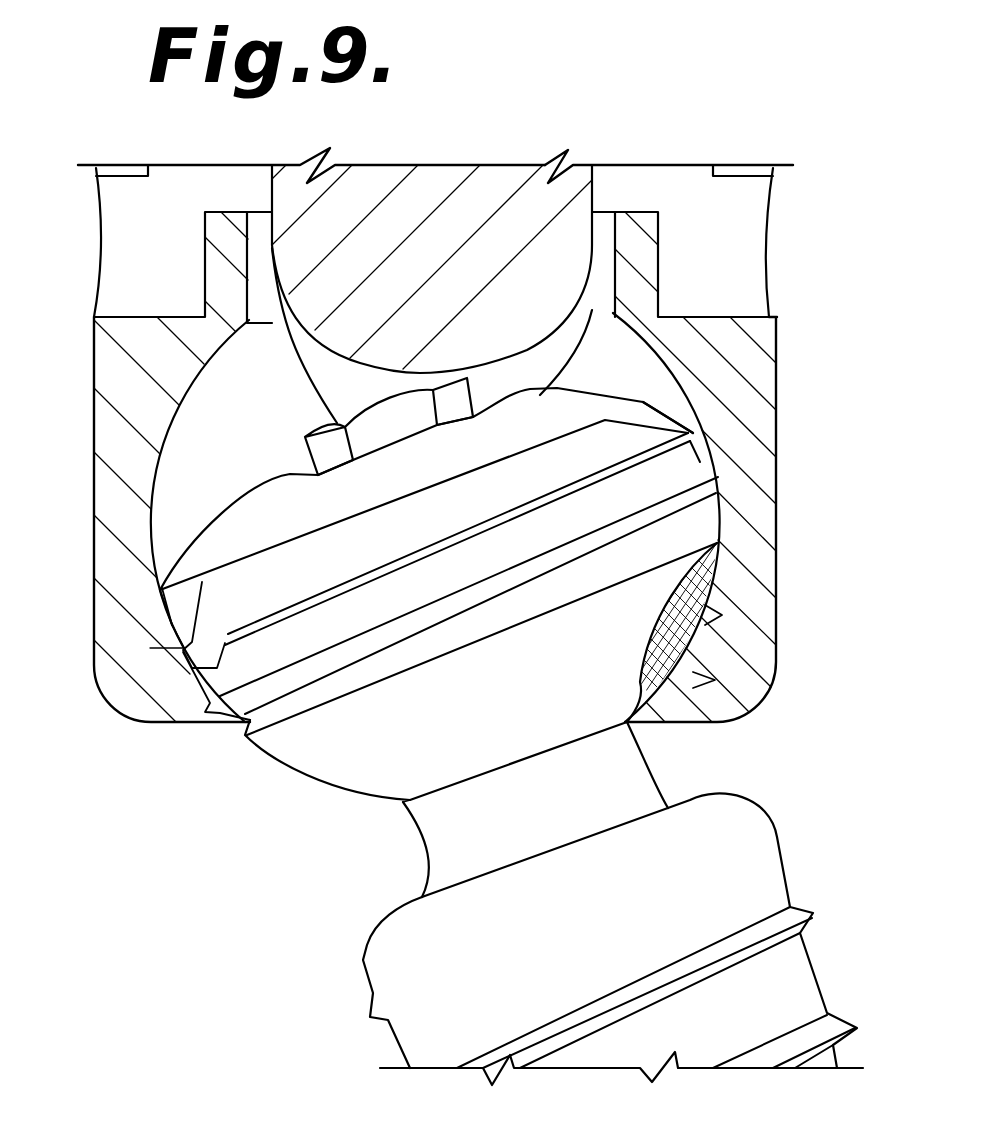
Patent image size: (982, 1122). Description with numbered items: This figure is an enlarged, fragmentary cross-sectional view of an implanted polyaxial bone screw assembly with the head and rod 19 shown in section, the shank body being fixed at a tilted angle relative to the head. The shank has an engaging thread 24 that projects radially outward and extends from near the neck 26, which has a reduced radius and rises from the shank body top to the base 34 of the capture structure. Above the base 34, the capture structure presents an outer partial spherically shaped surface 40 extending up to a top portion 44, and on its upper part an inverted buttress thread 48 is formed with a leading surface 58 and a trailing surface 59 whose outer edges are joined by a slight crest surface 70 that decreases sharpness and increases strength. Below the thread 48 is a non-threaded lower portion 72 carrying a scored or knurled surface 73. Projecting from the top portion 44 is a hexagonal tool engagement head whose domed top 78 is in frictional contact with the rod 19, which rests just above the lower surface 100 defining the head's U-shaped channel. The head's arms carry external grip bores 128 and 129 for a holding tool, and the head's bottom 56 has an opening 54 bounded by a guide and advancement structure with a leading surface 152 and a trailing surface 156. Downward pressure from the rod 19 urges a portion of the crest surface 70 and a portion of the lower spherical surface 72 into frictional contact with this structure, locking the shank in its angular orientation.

The rod 19 is at (452, 250).
The engaging thread 24 is at (808, 910).
The neck 26 is at (670, 800).
The base 34 is at (404, 805).
The outer substantially hemi-spherically or partial spherically shaped surface 40 is at (306, 768).
The top portion 44 is at (292, 486).
The inverted or reverse buttress thread 48 is at (705, 470).
The opening 54 is at (677, 710).
The lower end or bottom 56 is at (727, 722).
The leading surface or flank 58 is at (160, 600).
The trailing surface or flank 59 is at (680, 440).
The connecting wall or crest surface 70 is at (150, 648).
The non-threaded lower portion 72 is at (397, 748).
The scored or knurled surface 73 is at (713, 595).
The domed top 78 is at (340, 413).
The lower surface 100 is at (342, 352).
The grip bore 128 is at (130, 245).
The grip bore 129 is at (750, 240).
The leading surface 152 is at (170, 705).
The trailing surface 156 is at (690, 672).